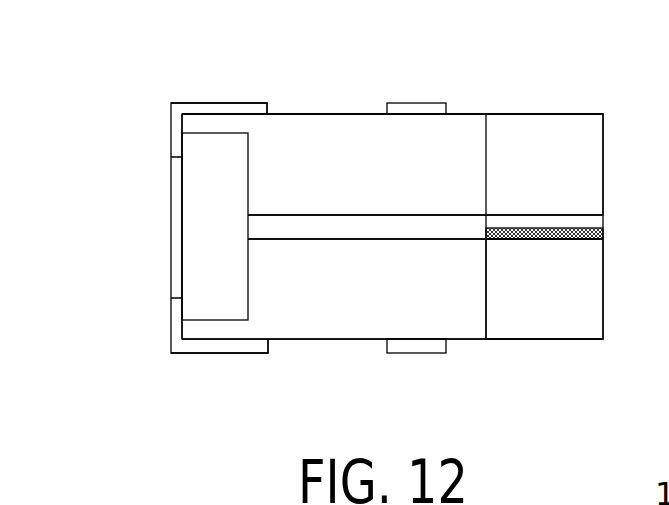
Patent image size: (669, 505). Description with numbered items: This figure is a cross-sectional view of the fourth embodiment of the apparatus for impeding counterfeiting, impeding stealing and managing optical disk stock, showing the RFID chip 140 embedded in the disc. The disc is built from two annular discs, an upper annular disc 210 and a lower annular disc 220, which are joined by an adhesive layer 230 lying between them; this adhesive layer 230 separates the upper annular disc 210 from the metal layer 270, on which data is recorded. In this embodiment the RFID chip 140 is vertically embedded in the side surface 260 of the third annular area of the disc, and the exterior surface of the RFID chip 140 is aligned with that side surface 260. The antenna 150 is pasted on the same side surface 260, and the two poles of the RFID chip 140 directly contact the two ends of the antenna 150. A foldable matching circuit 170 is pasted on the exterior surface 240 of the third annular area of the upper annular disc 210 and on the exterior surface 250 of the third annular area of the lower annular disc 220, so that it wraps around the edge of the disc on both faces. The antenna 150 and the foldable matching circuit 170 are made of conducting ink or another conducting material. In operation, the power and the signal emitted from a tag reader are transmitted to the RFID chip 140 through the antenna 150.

The RFID chip 140 is at (247, 203).
The antenna 150 is at (172, 217).
The foldable matching circuit 170 is at (406, 106).
The upper annular disc 210 is at (461, 183).
The lower annular disc 220 is at (475, 313).
The adhesive layer 230 is at (462, 227).
The exterior surface of the upper annular disc 240 is at (460, 113).
The exterior surface of the lower annular disc 250 is at (320, 338).
The side surface 260 is at (177, 125).
The metal layer 270 is at (566, 239).